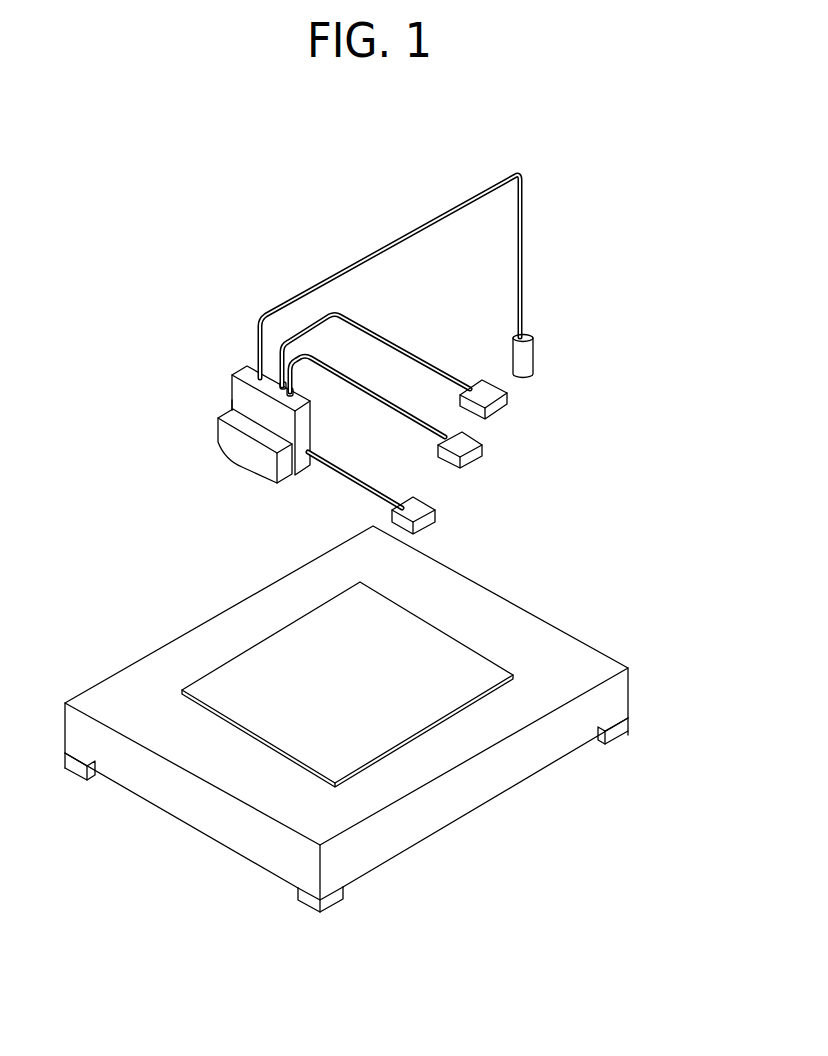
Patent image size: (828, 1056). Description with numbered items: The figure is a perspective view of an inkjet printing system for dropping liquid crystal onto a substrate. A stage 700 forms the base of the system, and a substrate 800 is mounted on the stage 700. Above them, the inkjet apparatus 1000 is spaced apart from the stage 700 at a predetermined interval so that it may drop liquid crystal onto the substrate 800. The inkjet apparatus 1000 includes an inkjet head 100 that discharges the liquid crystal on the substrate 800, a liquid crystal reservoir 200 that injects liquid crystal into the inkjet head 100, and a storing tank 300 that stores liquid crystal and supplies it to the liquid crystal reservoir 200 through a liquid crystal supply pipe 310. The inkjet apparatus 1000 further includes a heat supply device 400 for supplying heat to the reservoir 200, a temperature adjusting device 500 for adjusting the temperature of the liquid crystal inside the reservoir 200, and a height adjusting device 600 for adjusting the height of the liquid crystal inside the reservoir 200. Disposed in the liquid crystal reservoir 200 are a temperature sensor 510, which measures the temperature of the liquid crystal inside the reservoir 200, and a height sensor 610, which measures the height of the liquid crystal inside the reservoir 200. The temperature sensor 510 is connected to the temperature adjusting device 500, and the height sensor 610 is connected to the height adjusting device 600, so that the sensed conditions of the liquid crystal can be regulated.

The inkjet apparatus 1000 is at (258, 297).
The inkjet head 100 is at (258, 465).
The liquid crystal reservoir 200 is at (245, 392).
The storing tank 300 is at (528, 358).
The liquid crystal supply pipe 310 is at (413, 231).
The heat supply device 400 is at (436, 515).
The temperature adjusting device 500 is at (484, 453).
The temperature sensor 510 is at (300, 396).
The height adjusting device 600 is at (510, 401).
The height sensor 610 is at (232, 405).
The stage 700 is at (552, 668).
The substrate 800 is at (400, 645).